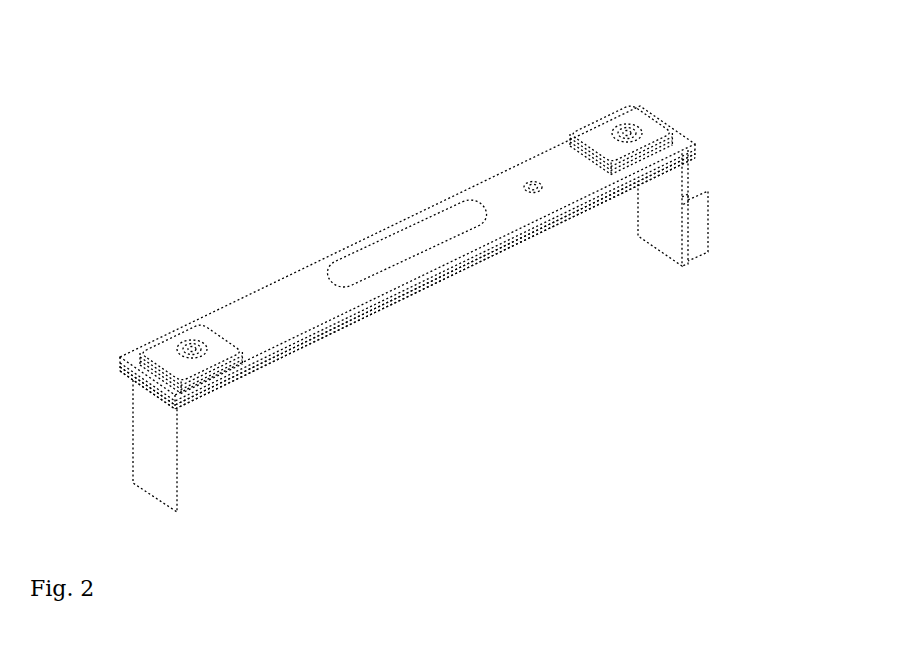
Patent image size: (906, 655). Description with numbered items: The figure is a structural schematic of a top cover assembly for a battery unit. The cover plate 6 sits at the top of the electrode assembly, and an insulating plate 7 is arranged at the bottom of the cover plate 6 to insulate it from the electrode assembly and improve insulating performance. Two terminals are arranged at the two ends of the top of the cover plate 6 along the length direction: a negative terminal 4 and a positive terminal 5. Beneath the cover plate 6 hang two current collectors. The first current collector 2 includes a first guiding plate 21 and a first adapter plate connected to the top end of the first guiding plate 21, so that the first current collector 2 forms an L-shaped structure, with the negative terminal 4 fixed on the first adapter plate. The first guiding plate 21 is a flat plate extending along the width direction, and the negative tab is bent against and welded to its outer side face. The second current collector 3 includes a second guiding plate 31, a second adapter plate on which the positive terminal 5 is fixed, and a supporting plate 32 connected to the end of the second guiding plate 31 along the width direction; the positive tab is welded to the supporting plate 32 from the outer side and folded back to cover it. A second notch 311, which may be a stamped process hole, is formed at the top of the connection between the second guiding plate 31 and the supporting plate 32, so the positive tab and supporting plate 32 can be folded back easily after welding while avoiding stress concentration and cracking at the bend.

The first current collector 2 is at (108, 460).
The first guiding plate 21 is at (145, 449).
The second current collector 3 is at (694, 240).
The second guiding plate 31 is at (664, 228).
The second notch 311 is at (684, 198).
The supporting plate 32 is at (699, 232).
The negative terminal 4 is at (191, 343).
The positive terminal 5 is at (624, 129).
The cover plate 6 is at (288, 292).
The insulating plate 7 is at (126, 371).